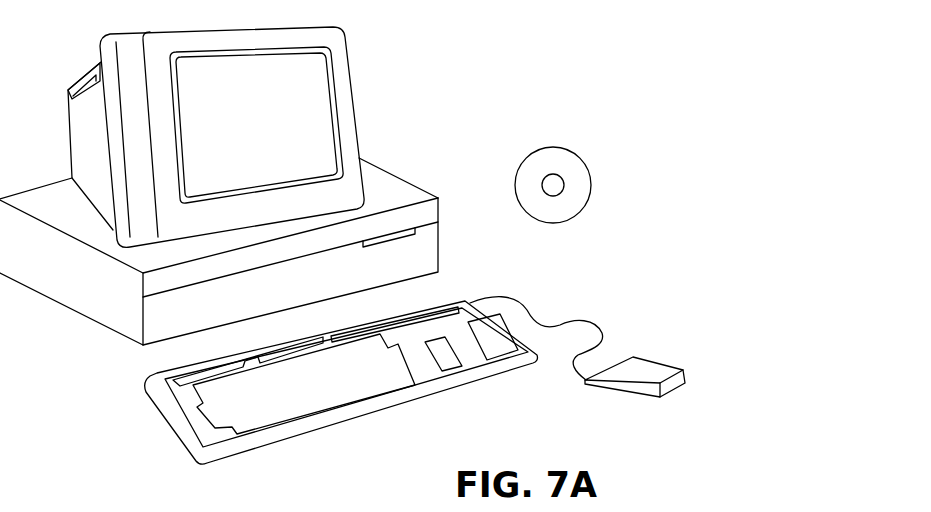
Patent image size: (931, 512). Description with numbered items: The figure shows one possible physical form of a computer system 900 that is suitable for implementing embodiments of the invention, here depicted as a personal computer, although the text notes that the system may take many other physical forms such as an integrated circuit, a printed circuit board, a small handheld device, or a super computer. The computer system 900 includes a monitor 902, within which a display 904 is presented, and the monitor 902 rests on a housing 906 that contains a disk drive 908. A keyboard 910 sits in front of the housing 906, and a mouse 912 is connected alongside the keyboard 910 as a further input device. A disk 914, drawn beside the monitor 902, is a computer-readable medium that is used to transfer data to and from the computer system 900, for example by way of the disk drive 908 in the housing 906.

The computer system 900 is at (468, 68).
The monitor 902 is at (358, 113).
The display 904 is at (318, 85).
The housing 906 is at (98, 326).
The disk drive 908 is at (415, 231).
The keyboard 910 is at (423, 400).
The mouse 912 is at (666, 361).
The disk 914 is at (567, 148).